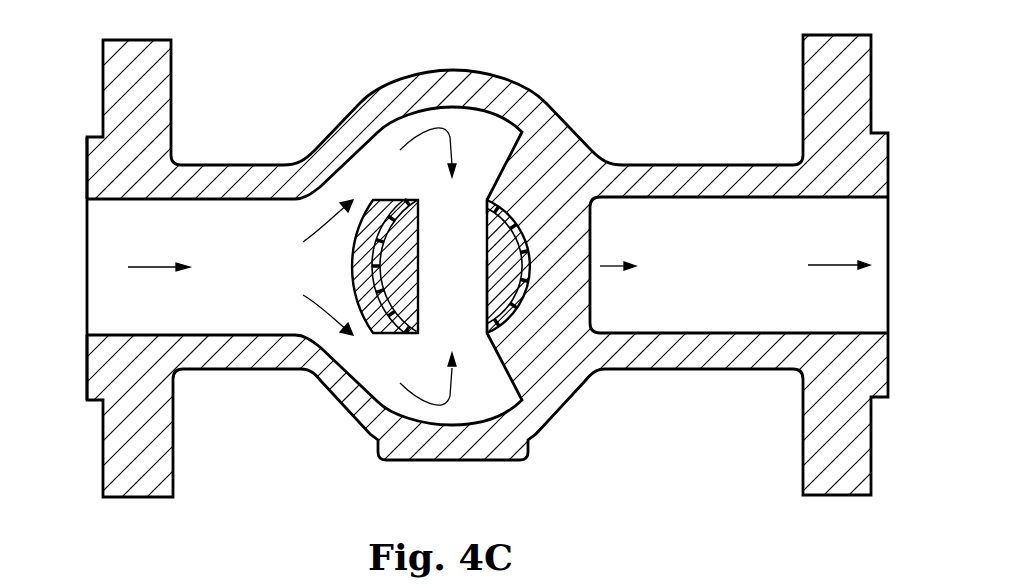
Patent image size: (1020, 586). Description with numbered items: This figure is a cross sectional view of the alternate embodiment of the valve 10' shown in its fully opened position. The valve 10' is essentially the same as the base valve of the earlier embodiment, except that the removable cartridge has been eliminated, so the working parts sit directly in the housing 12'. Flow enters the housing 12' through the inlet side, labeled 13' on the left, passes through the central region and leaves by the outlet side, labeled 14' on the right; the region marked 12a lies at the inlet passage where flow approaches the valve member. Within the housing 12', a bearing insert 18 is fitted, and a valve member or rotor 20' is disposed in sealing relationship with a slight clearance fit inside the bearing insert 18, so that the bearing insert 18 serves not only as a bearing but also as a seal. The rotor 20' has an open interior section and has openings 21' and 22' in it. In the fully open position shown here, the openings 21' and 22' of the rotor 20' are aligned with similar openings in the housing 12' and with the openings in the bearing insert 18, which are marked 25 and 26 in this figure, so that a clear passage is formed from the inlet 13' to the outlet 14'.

The valve 10' is at (487, 248).
The housing 12' is at (487, 265).
The inlet passage 12a is at (357, 257).
The inlet end 13' is at (63, 268).
The outlet end 14' is at (764, 265).
The bearing insert 18 is at (413, 336).
The valve member or rotor 20' is at (422, 275).
The opening 21' is at (461, 290).
The opening 22' is at (482, 263).
The lower seat portion 25 is at (487, 329).
The upper seat portion 26 is at (487, 205).